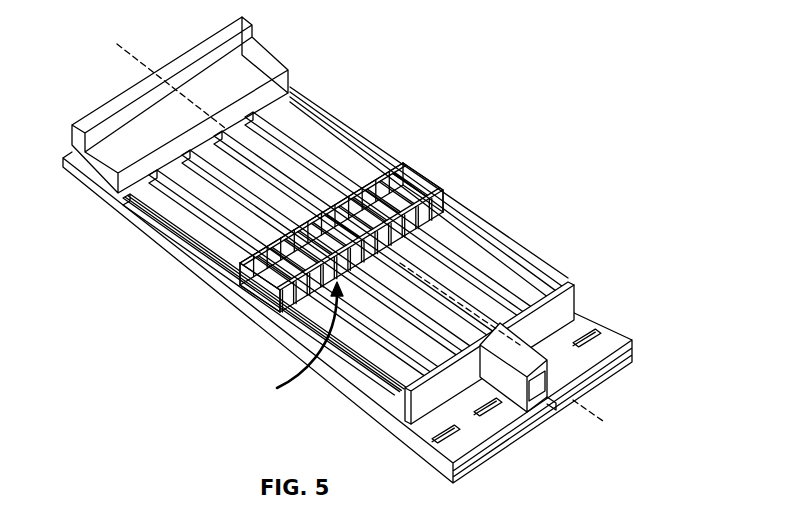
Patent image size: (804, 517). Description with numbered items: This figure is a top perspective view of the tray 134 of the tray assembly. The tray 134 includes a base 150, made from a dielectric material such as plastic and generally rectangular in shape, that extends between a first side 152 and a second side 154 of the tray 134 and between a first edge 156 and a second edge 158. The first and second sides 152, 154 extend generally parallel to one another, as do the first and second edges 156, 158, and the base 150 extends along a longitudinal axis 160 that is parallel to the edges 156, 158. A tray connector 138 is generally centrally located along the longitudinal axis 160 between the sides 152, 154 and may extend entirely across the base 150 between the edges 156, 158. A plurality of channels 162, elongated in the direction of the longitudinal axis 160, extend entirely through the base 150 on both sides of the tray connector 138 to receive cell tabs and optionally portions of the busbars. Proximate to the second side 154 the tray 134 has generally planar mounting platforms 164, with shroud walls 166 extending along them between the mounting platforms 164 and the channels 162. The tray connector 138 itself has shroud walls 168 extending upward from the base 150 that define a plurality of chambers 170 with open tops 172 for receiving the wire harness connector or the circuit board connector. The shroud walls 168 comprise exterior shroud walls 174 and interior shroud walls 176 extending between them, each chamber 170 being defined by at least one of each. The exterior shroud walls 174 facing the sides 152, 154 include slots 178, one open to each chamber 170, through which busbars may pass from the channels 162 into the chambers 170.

The tray 134 is at (472, 247).
The tray connector 138 is at (430, 168).
The base 150 is at (343, 360).
The first side 152 is at (188, 51).
The second side 154 is at (620, 370).
The first edge 156 is at (262, 280).
The second edge 158 is at (335, 110).
The longitudinal axis 160 is at (605, 422).
The channels 162 is at (507, 291).
The mounting platforms 164 is at (600, 345).
The shroud walls 166 is at (451, 432).
The shroud walls 168 is at (443, 205).
The chambers 170 is at (413, 160).
The open tops 172 is at (384, 232).
The exterior shroud walls 174 is at (378, 187).
The interior shroud walls 176 is at (265, 258).
The slots 178 is at (286, 340).